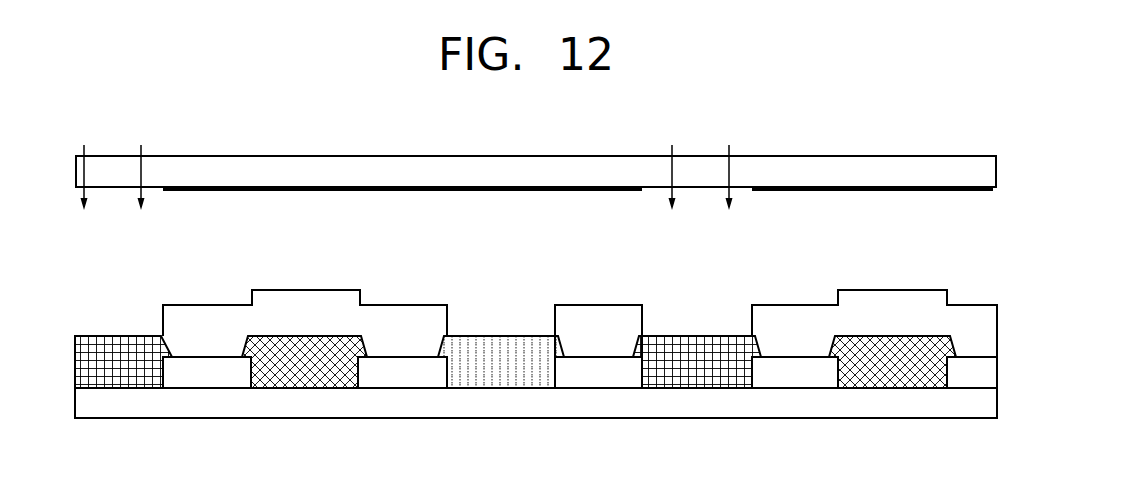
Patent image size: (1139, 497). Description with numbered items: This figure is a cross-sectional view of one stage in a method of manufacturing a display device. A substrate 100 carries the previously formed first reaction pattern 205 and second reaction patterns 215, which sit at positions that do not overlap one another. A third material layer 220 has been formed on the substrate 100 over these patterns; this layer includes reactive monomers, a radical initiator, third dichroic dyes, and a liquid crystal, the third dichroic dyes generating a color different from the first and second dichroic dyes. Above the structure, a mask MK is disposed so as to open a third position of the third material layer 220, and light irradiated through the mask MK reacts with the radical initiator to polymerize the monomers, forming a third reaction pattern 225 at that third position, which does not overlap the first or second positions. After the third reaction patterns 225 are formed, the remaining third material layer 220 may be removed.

The mask MK is at (987, 176).
The substrate 100 is at (987, 405).
The first reaction pattern 205 is at (892, 380).
The second reaction pattern 215 is at (503, 380).
The third material layer 220 is at (987, 336).
The third reaction pattern 225 is at (697, 380).